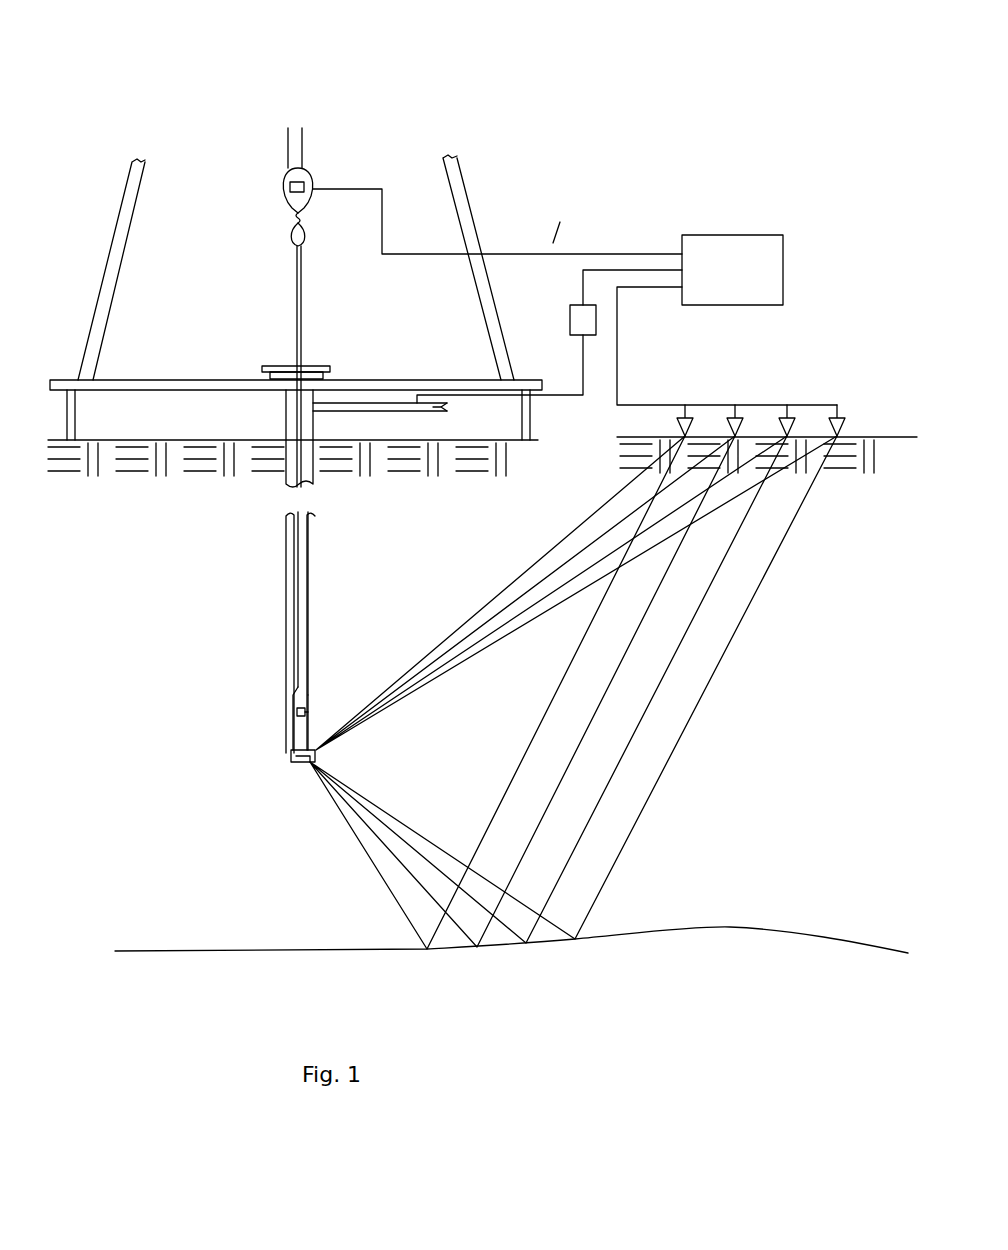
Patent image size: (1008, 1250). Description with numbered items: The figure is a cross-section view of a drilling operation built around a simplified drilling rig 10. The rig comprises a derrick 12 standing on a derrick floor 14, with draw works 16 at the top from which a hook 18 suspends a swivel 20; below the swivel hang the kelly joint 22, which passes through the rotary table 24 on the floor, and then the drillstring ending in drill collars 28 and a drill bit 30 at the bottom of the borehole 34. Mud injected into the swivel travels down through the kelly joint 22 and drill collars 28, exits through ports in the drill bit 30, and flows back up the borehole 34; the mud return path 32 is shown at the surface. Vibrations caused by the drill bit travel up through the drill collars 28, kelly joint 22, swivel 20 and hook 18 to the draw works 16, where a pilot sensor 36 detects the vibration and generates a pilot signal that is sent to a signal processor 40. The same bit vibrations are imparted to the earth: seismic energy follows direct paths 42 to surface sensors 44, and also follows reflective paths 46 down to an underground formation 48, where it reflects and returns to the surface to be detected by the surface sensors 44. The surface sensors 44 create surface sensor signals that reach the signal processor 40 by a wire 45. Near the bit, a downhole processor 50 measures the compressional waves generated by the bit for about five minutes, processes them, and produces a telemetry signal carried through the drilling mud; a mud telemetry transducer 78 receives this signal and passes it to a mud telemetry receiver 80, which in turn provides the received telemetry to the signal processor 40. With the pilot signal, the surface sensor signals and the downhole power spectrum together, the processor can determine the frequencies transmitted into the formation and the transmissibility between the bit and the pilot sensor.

The drilling rig 10 is at (508, 98).
The derrick 12 is at (465, 208).
The derrick floor 14 is at (462, 378).
The draw works 16 is at (325, 138).
The hook 18 is at (297, 217).
The swivel 20 is at (289, 232).
The kelly joint 22 is at (299, 300).
The rotary table 24 is at (280, 365).
The drill collars 28 is at (298, 727).
The drill bit 30 is at (298, 745).
The mud flow line 32 is at (357, 411).
The borehole 34 is at (314, 593).
The pilot sensor 36 is at (288, 182).
The signal processor 40 is at (737, 263).
The direct paths 42 is at (535, 617).
The surface sensors 44 is at (837, 418).
The wire 45 is at (620, 357).
The reflective paths 46 is at (635, 822).
The underground formation 48 is at (805, 931).
The downhole processor 50 is at (297, 710).
The mud telemetry transducer 78 is at (418, 406).
The mud telemetry receiver 80 is at (577, 317).